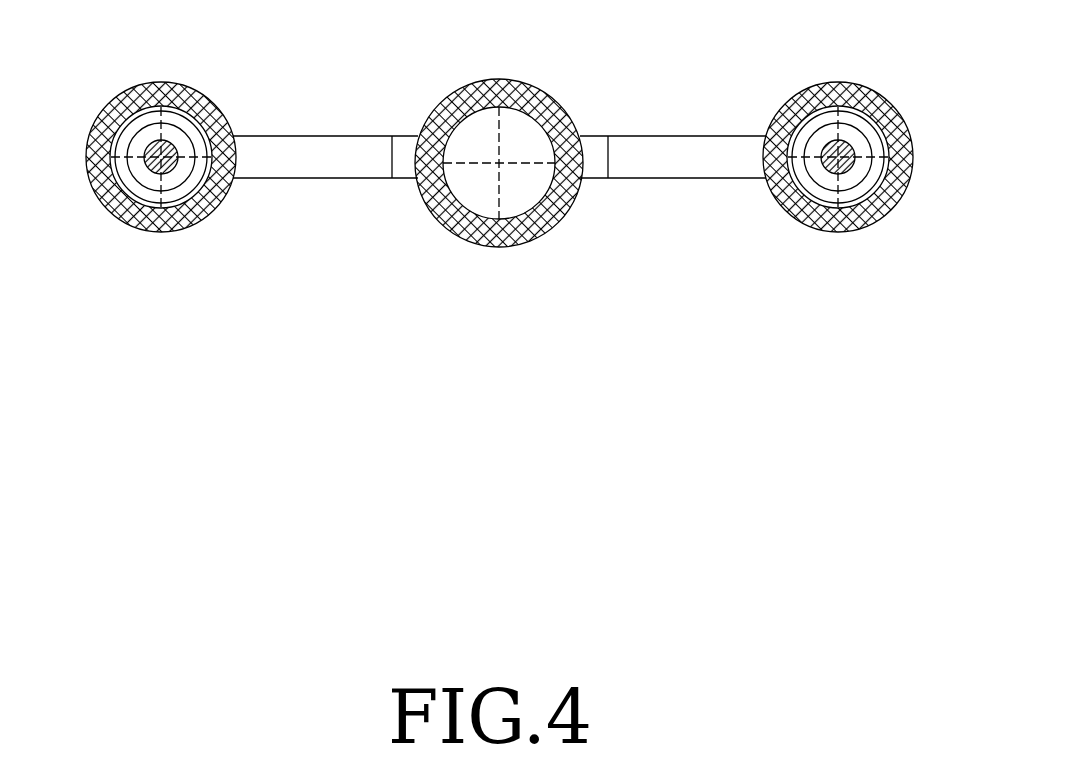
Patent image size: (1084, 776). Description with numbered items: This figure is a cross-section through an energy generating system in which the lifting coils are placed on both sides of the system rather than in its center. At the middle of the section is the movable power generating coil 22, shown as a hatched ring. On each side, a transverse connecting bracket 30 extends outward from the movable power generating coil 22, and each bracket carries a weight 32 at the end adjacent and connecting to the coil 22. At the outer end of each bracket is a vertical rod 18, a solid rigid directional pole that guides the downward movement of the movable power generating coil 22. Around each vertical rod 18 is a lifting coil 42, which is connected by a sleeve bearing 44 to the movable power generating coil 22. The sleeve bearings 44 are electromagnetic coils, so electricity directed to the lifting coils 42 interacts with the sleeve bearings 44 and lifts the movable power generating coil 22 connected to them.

The vertical rod 18 is at (177, 150).
The movable power generating coil 22 is at (547, 108).
The transverse connecting bracket 30 is at (317, 148).
The weight 32 is at (407, 150).
The lifting coil 42 is at (153, 117).
The sleeve bearing 44 is at (108, 110).